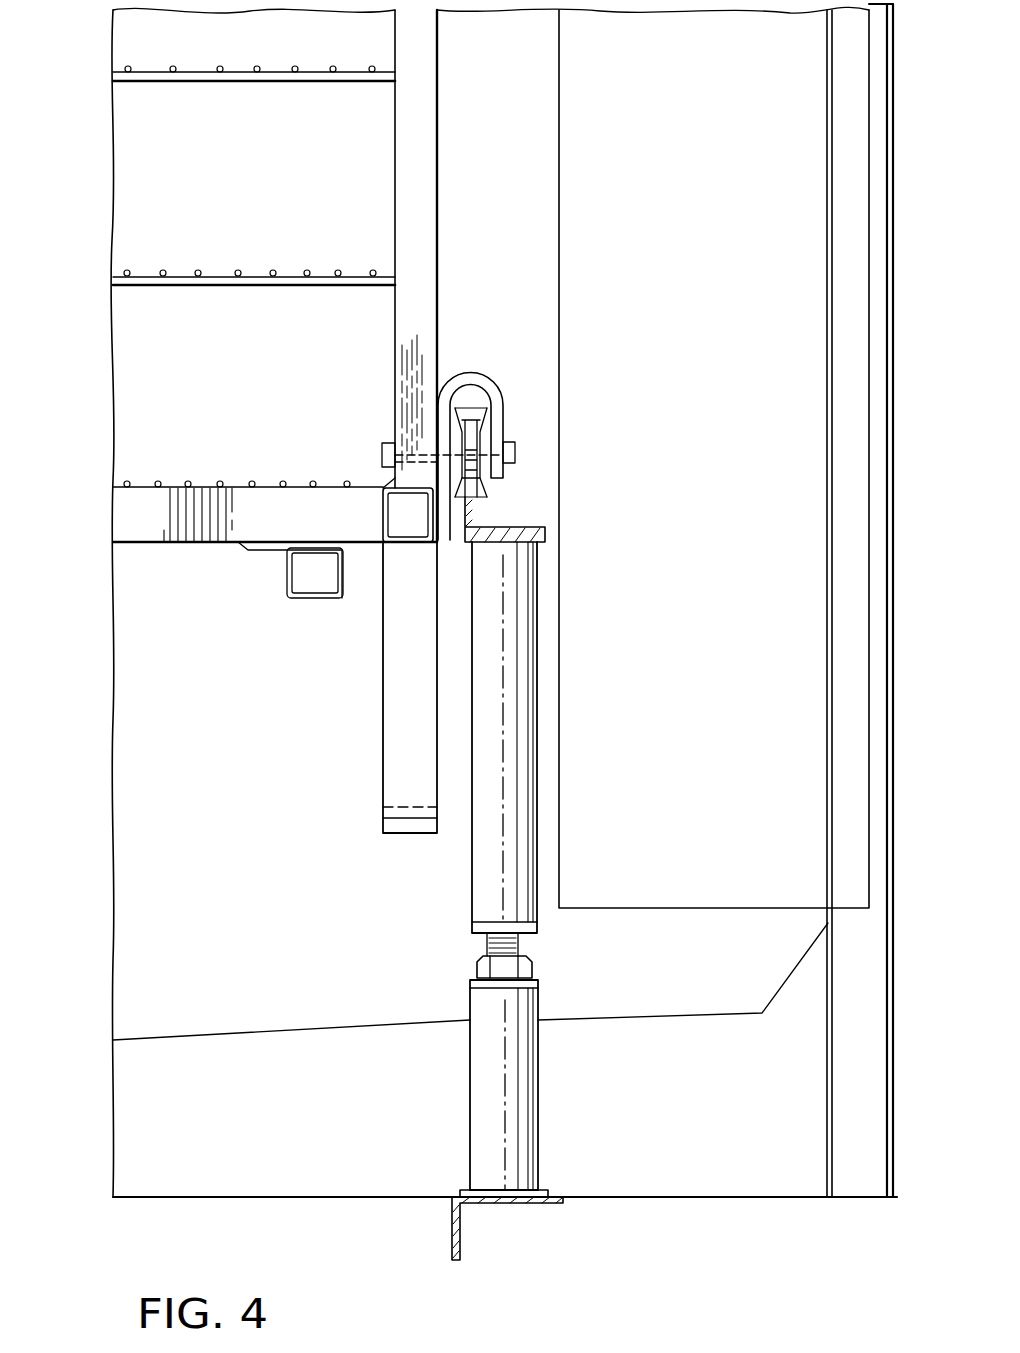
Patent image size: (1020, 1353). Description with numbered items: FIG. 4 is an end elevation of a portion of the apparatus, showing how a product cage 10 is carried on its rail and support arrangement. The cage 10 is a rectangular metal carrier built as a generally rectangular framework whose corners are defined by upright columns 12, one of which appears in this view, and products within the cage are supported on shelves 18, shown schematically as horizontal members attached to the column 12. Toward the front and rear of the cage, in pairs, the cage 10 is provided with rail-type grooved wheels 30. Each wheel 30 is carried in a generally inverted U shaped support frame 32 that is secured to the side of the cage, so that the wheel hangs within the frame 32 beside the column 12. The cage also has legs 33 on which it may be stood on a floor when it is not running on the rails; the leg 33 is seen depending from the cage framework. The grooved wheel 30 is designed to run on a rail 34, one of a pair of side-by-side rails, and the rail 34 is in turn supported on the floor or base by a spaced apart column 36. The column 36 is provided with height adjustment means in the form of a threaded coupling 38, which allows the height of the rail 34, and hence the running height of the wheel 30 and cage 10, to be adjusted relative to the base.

The cage 10 is at (488, 117).
The upright column 12 is at (418, 216).
The shelf 18 is at (238, 82).
The rail-type grooved wheel 30 is at (468, 420).
The inverted U shaped support frame 32 is at (468, 372).
The leg 33 is at (385, 748).
The rail 34 is at (477, 515).
The column 36 is at (523, 720).
The threaded coupling 38 is at (490, 945).